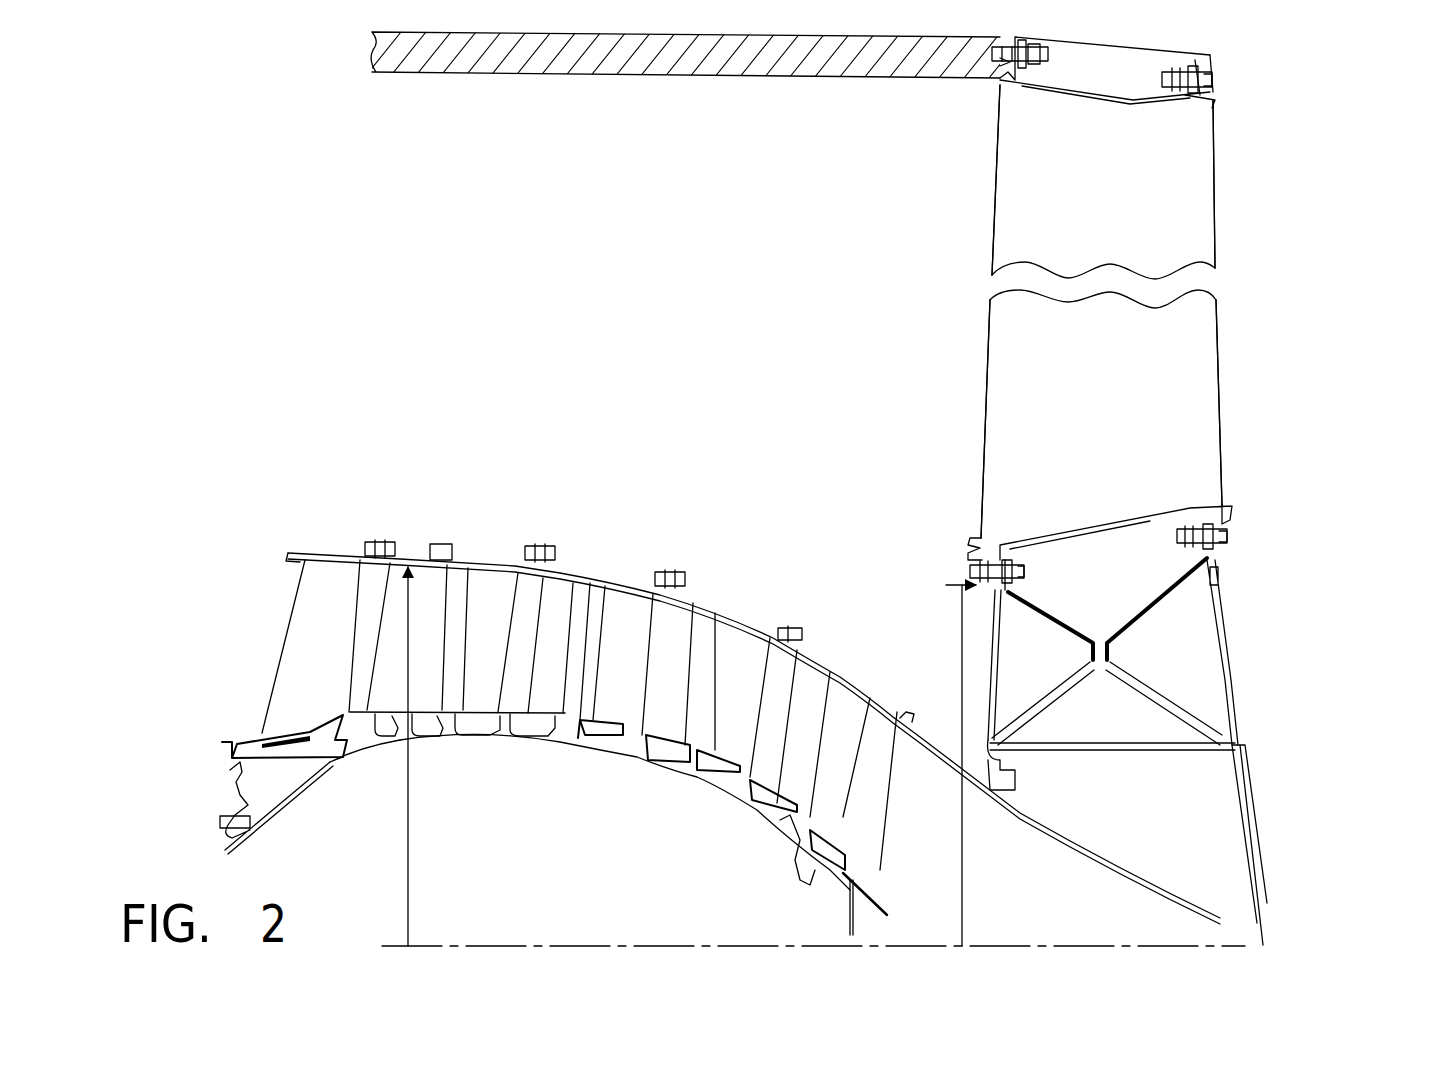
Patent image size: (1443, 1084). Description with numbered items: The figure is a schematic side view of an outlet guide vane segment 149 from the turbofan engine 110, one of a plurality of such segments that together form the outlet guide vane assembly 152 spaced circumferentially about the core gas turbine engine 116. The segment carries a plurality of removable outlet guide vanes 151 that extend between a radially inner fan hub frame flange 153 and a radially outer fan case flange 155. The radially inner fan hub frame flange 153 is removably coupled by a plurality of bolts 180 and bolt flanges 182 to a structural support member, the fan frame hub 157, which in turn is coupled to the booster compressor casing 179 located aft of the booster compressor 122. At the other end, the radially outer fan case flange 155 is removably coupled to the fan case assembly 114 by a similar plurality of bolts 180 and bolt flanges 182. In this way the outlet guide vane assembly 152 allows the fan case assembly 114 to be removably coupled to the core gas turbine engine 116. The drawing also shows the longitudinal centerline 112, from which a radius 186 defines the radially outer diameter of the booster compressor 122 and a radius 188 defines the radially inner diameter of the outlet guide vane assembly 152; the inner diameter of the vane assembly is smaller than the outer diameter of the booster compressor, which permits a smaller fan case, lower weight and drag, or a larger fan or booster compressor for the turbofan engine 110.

The turbofan engine 110 is at (440, 325).
The longitudinal centerline 112 is at (652, 944).
The fan case assembly 114 is at (682, 80).
The core gas turbine engine 116 is at (335, 548).
The booster compressor 122 is at (630, 588).
The outlet guide vane segment 149 is at (1228, 194).
The outlet guide vane assembly 152 is at (1228, 194).
The outlet guide vanes 151 is at (1035, 215).
The radially inner fan hub frame flange 153 is at (1050, 533).
The radially outer fan case flange 155 is at (1095, 93).
The fan frame hub 157 is at (1223, 650).
The booster compressor casing 179 is at (755, 635).
The bolts 180 is at (1215, 80).
The bolt flanges 182 is at (1195, 98).
The radius 186 is at (410, 856).
The radius 188 is at (963, 868).